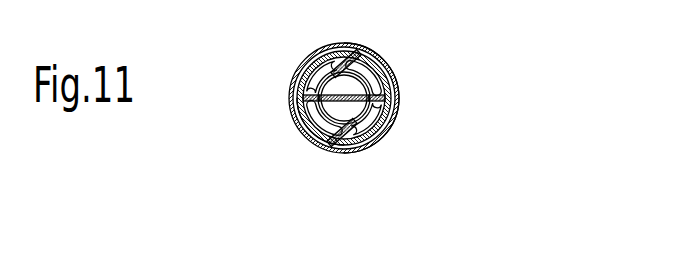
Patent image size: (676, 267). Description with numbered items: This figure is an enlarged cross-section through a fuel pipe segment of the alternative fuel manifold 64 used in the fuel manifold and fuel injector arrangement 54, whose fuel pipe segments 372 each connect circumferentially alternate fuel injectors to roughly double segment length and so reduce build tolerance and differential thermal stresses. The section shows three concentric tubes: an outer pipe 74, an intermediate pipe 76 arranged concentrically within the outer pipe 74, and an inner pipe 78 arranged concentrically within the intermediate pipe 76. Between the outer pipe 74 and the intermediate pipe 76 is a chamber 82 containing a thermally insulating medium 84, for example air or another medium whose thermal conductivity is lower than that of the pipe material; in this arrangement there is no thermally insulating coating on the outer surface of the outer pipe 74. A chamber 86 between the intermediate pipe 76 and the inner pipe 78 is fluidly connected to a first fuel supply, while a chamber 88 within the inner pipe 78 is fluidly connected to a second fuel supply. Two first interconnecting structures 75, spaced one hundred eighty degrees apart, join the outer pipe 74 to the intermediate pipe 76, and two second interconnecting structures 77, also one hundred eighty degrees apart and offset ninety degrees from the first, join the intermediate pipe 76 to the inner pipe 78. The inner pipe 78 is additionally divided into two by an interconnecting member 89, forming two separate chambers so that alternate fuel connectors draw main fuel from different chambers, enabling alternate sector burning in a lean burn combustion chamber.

The fuel manifold and fuel injector arrangement 54 is at (480, 113).
The fuel manifold 64 is at (405, 83).
The outer pipe 74 is at (351, 150).
The first interconnecting structures 75 is at (392, 112).
The intermediate pipe 76 is at (363, 80).
The second interconnecting structures 77 is at (338, 63).
The inner pipe 78 is at (372, 95).
The chamber 82 is at (388, 128).
The thermally insulating medium 84 is at (370, 135).
The chamber 86 is at (390, 70).
The chamber 88 is at (353, 68).
The interconnecting member 89 is at (318, 72).
The fuel pipe segments 372 is at (283, 141).